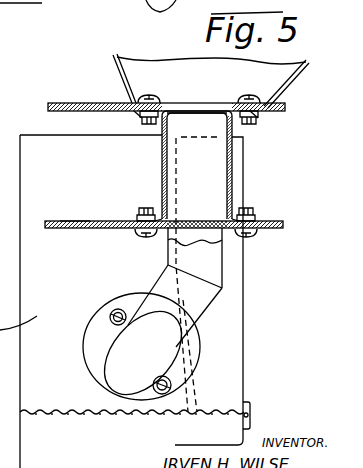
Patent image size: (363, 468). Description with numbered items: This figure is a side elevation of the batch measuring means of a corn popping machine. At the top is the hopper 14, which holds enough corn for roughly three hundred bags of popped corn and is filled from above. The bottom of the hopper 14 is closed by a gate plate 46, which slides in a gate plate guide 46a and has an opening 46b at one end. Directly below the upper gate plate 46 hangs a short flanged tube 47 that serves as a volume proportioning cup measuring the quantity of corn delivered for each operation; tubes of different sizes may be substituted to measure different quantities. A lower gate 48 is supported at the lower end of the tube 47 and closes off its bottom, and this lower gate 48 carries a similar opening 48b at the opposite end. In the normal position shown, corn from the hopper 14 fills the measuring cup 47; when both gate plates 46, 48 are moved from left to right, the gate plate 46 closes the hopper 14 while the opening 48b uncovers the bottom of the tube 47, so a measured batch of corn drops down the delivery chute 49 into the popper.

The hopper 14 is at (306, 64).
The gate plate 46 is at (70, 104).
The gate plate guide 46a is at (138, 113).
The opening 46b is at (205, 110).
The flanged tube 47 is at (232, 168).
The lower gate 48 is at (271, 221).
The opening 48b is at (73, 220).
The delivery chute 49 is at (212, 275).